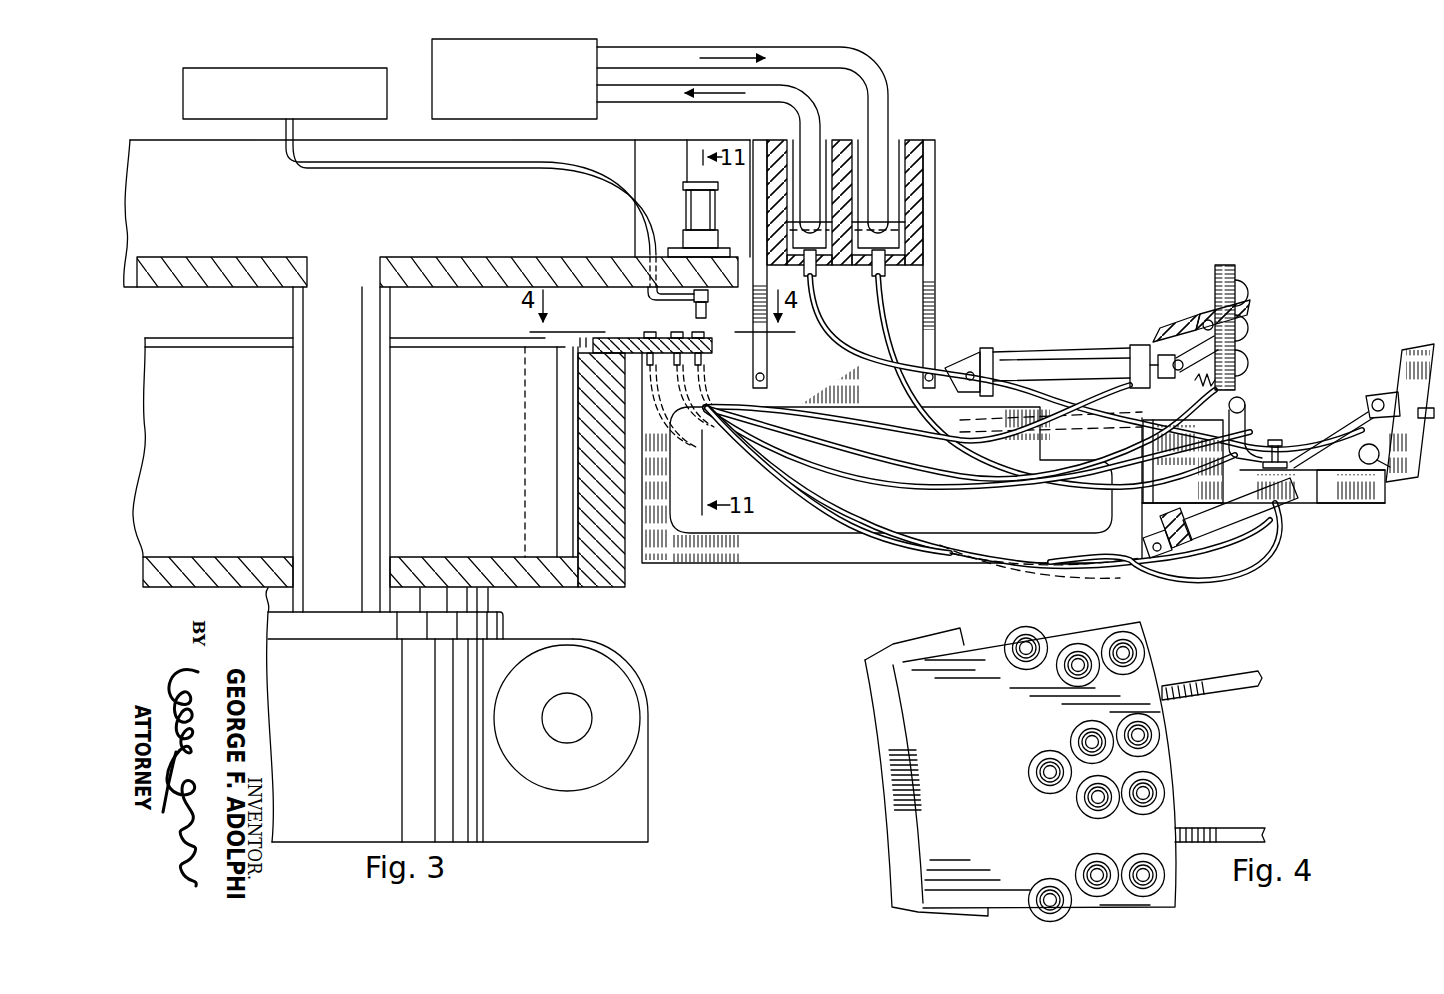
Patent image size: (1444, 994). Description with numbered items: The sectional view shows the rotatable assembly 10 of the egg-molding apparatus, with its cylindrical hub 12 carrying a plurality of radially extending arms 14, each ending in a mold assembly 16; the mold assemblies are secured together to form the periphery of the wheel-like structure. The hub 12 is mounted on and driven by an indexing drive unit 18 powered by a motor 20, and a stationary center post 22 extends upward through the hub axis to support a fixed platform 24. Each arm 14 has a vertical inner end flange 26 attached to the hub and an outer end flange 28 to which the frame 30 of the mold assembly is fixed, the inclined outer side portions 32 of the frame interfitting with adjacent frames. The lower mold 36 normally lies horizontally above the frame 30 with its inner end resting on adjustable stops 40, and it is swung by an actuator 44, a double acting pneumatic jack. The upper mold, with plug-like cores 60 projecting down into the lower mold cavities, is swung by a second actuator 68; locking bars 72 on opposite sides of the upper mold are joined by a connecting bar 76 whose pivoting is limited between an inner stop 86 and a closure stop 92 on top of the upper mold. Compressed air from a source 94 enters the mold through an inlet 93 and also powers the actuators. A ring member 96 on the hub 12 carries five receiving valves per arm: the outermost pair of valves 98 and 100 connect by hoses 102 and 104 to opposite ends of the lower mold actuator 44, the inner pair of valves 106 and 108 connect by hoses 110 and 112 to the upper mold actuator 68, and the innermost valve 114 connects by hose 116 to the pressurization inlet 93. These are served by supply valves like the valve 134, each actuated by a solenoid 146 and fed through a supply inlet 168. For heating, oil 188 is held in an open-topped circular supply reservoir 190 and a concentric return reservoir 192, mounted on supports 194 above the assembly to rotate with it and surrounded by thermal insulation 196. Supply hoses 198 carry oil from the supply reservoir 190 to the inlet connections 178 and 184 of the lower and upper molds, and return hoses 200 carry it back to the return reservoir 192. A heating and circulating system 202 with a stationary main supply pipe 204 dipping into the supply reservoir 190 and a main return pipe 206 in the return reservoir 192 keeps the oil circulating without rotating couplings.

In FIG. 3, the rotatable assembly 10 is at (760, 570).
In FIG. 3, the cylindrical hub 12 is at (628, 575).
In FIG. 4, the cylindrical hub 12 is at (887, 718).
In FIG. 3, the radially extending arms 14 is at (812, 553).
In FIG. 4, the radially extending arms 14 is at (1222, 683).
In FIG. 3, the mold assembly 16 is at (1339, 512).
In FIG. 3, the indexing drive unit 18 is at (463, 666).
In FIG. 3, the motor 20 is at (630, 698).
In FIG. 3, the stationary center post 22 is at (392, 423).
In FIG. 3, the fixed platform 24 is at (403, 256).
In FIG. 3, the vertical inner end flange 26 is at (633, 525).
In FIG. 3, the outer end flange 28 is at (1148, 483).
In FIG. 3, the frame 30 is at (1270, 510).
In FIG. 3, the outer side portions 32 is at (1331, 496).
In FIG. 3, the lower mold 36 is at (1410, 350).
In FIG. 3, the adjustable stops 40 is at (1279, 440).
In FIG. 3, the actuator 44 is at (1195, 535).
In FIG. 3, the plug-like cores 60 is at (1247, 284).
In FIG. 3, the actuator 68 is at (1057, 357).
In FIG. 3, the locking bars 72 is at (1243, 310).
In FIG. 3, the connecting bar 76 is at (1170, 325).
In FIG. 3, the inner stop 86 is at (1210, 345).
In FIG. 3, the closure stop 92 is at (1202, 305).
In FIG. 3, the inlet 93 is at (1232, 376).
In FIG. 3, the source of compressed air 94 is at (183, 79).
In FIG. 3, the ring member 96 is at (593, 345).
In FIG. 4, the ring member 96 is at (975, 650).
In FIG. 4, the valve 98 is at (1155, 733).
In FIG. 3, the valve 100 is at (704, 338).
In FIG. 4, the valve 100 is at (1140, 648).
In FIG. 3, the hose 102 is at (882, 525).
In FIG. 3, the hose 104 is at (813, 515).
In FIG. 4, the valve 106 is at (1080, 728).
In FIG. 3, the valve 108 is at (655, 330).
In FIG. 4, the valve 108 is at (1072, 648).
In FIG. 3, the hose 110 is at (905, 432).
In FIG. 3, the hose 112 is at (897, 471).
In FIG. 3, the single valve 114 is at (612, 333).
In FIG. 4, the single valve 114 is at (1013, 660).
In FIG. 3, the hose 116 is at (913, 488).
In FIG. 3, the valve 134 is at (709, 297).
In FIG. 3, the solenoid 146 is at (692, 202).
In FIG. 3, the supply inlet 168 is at (688, 297).
In FIG. 3, the inlet connection 178 is at (1380, 466).
In FIG. 3, the inlet connection 184 is at (1247, 404).
In FIG. 3, the heating oil 188 is at (930, 170).
In FIG. 3, the supply reservoir 190 is at (905, 145).
In FIG. 3, the return reservoir 192 is at (826, 143).
In FIG. 3, the supports 194 is at (757, 148).
In FIG. 3, the thermal insulation 196 is at (928, 195).
In FIG. 3, the supply hoses 198 is at (890, 322).
In FIG. 3, the return hoses 200 is at (838, 318).
In FIG. 3, the heating and circulating system 202 is at (432, 47).
In FIG. 3, the main supply pipe 204 is at (873, 68).
In FIG. 3, the main return pipe 206 is at (683, 100).